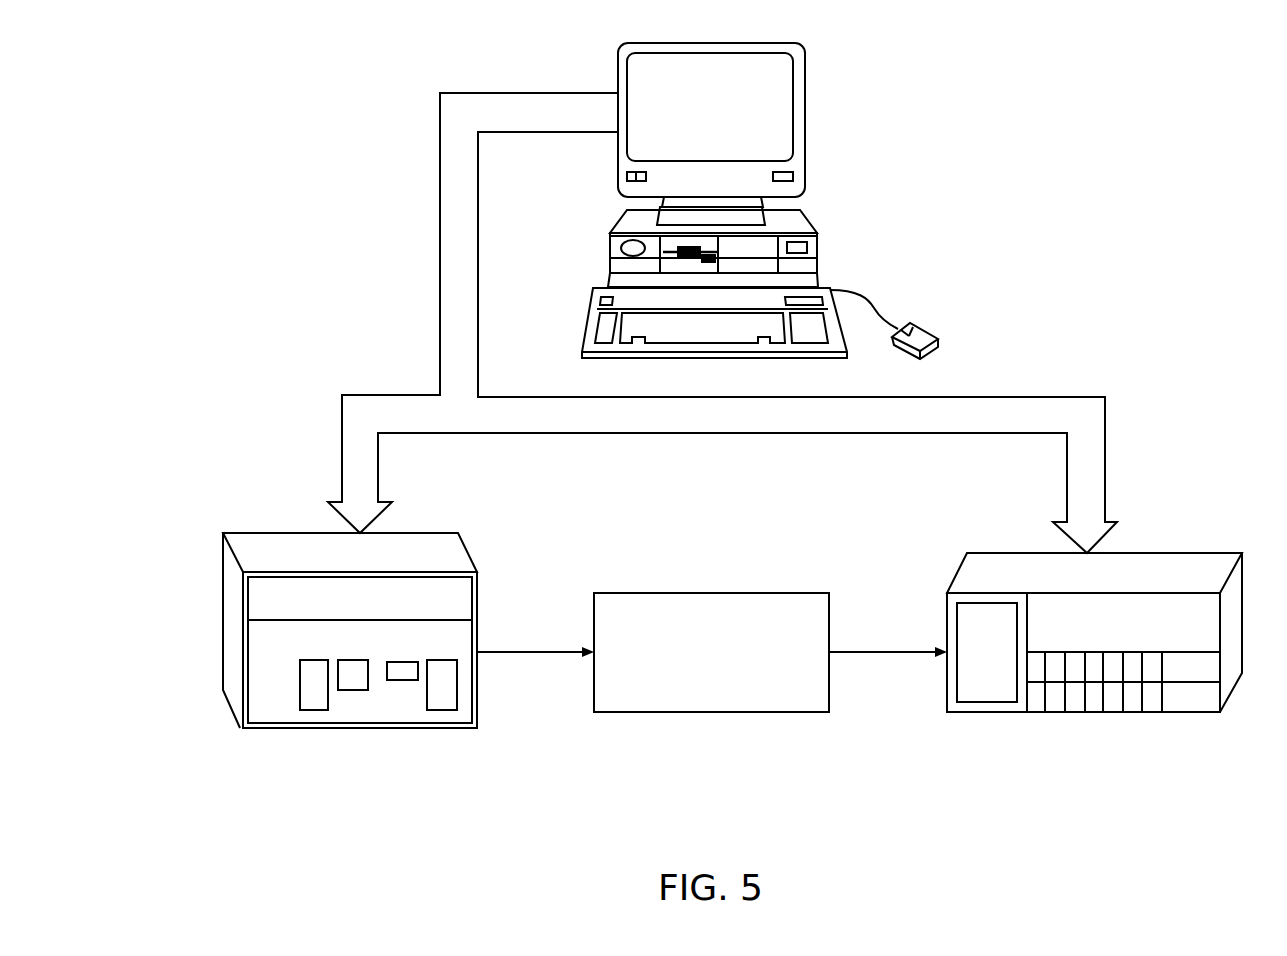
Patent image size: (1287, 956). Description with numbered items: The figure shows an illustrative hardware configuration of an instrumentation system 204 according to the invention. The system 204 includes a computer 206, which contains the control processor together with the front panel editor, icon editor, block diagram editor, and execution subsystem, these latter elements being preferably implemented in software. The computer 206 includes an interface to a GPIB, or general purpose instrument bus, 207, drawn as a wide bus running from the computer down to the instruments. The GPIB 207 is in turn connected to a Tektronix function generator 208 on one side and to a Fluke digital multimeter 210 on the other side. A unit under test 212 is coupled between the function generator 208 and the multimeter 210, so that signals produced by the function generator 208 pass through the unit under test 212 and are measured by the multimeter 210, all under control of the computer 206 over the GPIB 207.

The instrumentation system 204 is at (1033, 198).
The computer 206 is at (805, 120).
The GPIB (general purpose instrument bus) 207 is at (1008, 428).
The function generator 208 is at (408, 666).
The digital multimeter 210 is at (1093, 684).
The unit under test 212 is at (733, 697).